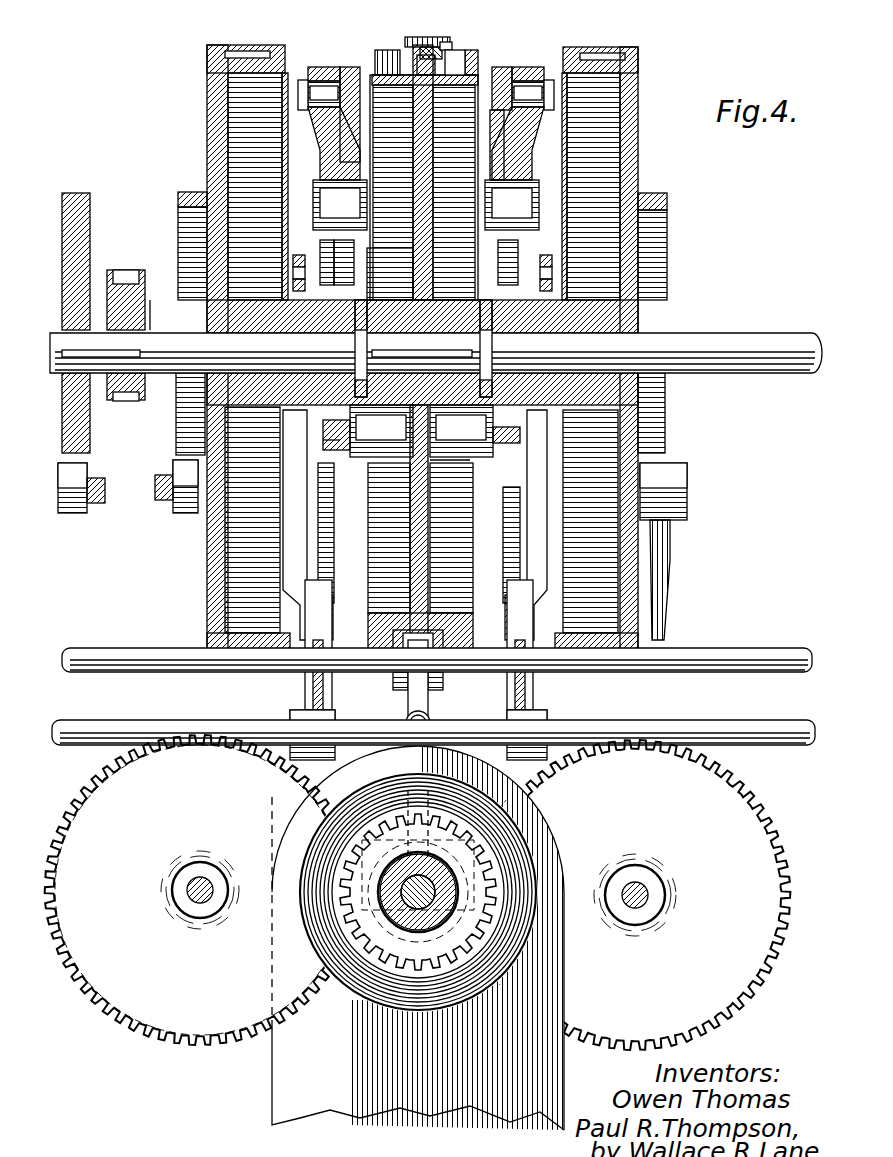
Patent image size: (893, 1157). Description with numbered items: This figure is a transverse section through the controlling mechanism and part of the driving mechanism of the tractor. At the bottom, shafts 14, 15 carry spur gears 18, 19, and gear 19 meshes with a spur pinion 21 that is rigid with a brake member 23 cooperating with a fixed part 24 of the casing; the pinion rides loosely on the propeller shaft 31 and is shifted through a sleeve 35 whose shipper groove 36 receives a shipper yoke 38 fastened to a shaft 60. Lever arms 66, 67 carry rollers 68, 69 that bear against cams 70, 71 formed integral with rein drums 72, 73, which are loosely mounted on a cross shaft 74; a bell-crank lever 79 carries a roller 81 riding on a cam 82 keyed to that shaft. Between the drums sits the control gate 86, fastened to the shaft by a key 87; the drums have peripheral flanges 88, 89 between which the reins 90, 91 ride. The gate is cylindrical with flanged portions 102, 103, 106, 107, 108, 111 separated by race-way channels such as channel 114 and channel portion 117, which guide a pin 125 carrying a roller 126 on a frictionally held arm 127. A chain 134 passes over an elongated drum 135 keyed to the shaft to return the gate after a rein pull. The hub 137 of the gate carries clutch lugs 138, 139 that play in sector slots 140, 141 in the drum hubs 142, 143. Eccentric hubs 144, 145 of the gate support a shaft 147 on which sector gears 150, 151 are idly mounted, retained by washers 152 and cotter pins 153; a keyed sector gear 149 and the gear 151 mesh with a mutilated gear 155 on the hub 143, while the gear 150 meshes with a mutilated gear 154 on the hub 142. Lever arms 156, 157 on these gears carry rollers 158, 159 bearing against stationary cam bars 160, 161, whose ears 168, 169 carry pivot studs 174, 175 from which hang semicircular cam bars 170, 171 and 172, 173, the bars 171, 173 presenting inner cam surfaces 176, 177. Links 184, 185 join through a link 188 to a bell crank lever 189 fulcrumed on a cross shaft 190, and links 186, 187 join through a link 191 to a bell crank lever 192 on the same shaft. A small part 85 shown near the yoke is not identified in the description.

The shaft 14 is at (648, 893).
The shaft 15 is at (190, 888).
The spur gear 18 is at (634, 894).
The spur gear 19 is at (199, 889).
The spur pinion 21 is at (418, 892).
The brake member 23 is at (376, 988).
The fixed part of the casing 24 is at (418, 938).
The propeller shaft 31 is at (400, 890).
The sleeve 35 is at (385, 905).
The shipper groove 36 is at (434, 905).
The shipper yoke 38 is at (408, 704).
The shaft 60 is at (704, 652).
The lever arm 66 is at (668, 582).
The lever arm 67 is at (164, 502).
The roller 68 is at (664, 470).
The roller 69 is at (186, 515).
The cam 70 is at (656, 200).
The cam 71 is at (200, 200).
The rein drum 72 is at (632, 118).
The rein drum 73 is at (208, 126).
The cross shaft 74 is at (720, 326).
The bell-crank lever 79 is at (96, 504).
The roller 81 is at (74, 514).
The cam 82 is at (76, 193).
The pin 85 is at (428, 716).
The control gate member 86 is at (457, 62).
The key 87 is at (470, 350).
The peripheral flange 88 is at (634, 46).
The peripheral flange 89 is at (280, 46).
The rein 90 is at (602, 44).
The rein 91 is at (247, 43).
The flanged portion 102 is at (443, 660).
The flanged portion 103 is at (393, 660).
The flanged portion 106 is at (466, 72).
The flanged portion 107 is at (480, 47).
The flanged portion 108 is at (420, 55).
The flanged portion 111 is at (386, 51).
The race-way channel 114 is at (418, 651).
The channel portion 117 is at (454, 192).
The pin 125 is at (440, 46).
The roller 126 is at (452, 44).
The arm 127 is at (424, 36).
The chain 134 is at (124, 411).
The elongated drum 135 is at (154, 310).
The hub of the control gate 137 is at (381, 431).
The clutch lug 138 is at (492, 334).
The clutch lug 139 is at (356, 334).
The sector slot 140 is at (482, 410).
The sector slot 141 is at (350, 432).
The hub 142 is at (580, 312).
The hub 143 is at (262, 312).
The eccentric hub 144 is at (446, 460).
The eccentric hub 145 is at (413, 250).
The shaft 147 is at (300, 284).
The sector gear 149 is at (323, 442).
The sector gear 150 is at (505, 262).
The sector gear 151 is at (344, 256).
The washer 152 is at (295, 272).
The cotter pin 153 is at (295, 258).
The mutilated gear 154 is at (520, 436).
The mutilated gear 155 is at (390, 274).
The lever arm 156 is at (520, 240).
The lever arm 157 is at (320, 250).
The roller 158 is at (520, 180).
The roller 159 is at (322, 196).
The cam bar 160 is at (490, 135).
The cam bar 161 is at (322, 138).
The ear 168 is at (502, 66).
The ear 169 is at (352, 66).
The cam bar 170 is at (526, 66).
The cam bar 171 is at (538, 80).
The cam bar 172 is at (330, 80).
The cam bar 173 is at (320, 66).
The pivot stud 174 is at (550, 82).
The pivot stud 175 is at (300, 85).
The inner cam surface 176 is at (503, 496).
The inner cam surface 177 is at (334, 490).
The link 184 is at (518, 598).
The link 185 is at (527, 500).
The link 186 is at (322, 600).
The link 187 is at (283, 500).
The link 188 is at (514, 650).
The bell crank lever 189 is at (535, 680).
The cross shaft 190 is at (612, 732).
The link 191 is at (332, 650).
The bell crank lever 192 is at (305, 700).